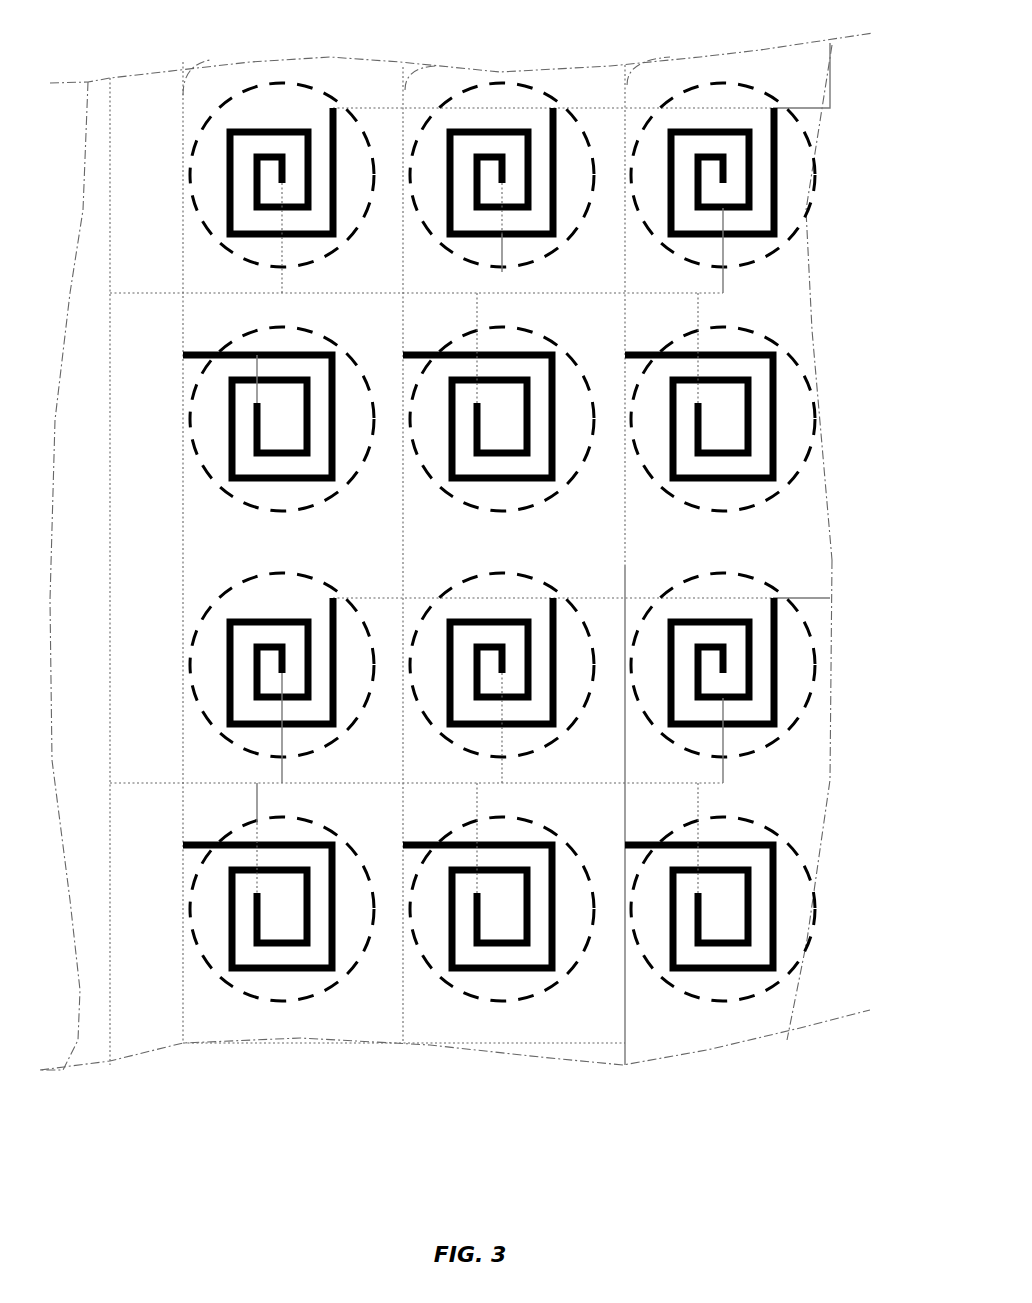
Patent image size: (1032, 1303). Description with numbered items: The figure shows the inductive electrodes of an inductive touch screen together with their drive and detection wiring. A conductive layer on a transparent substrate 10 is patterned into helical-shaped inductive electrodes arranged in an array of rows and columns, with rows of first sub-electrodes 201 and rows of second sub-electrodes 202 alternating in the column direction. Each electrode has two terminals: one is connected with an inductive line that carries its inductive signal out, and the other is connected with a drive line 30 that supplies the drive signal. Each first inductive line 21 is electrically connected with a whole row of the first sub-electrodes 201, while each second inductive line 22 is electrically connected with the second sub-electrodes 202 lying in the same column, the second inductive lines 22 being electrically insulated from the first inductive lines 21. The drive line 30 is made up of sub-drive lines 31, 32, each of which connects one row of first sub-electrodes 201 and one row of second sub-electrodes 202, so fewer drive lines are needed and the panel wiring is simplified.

The transparent substrate 10 is at (773, 1017).
The first inductive line 21 is at (798, 100).
The second inductive line 22 is at (210, 60).
The drive line 30 is at (108, 940).
The sub-drive line 31 is at (207, 293).
The sub-drive line 32 is at (207, 783).
The first sub-electrode 201 is at (305, 82).
The second sub-electrode 202 is at (282, 510).